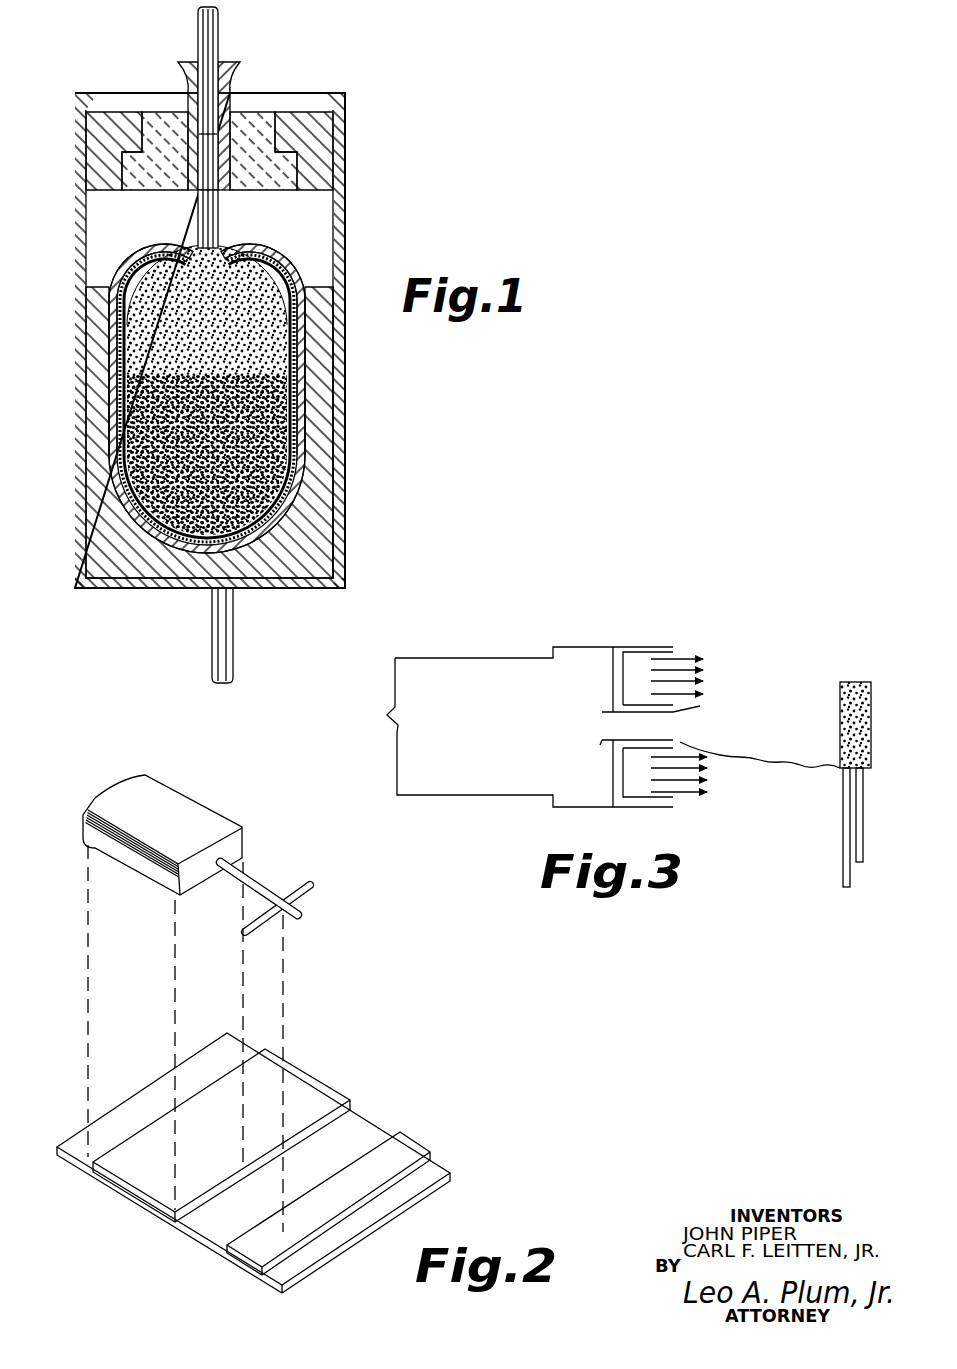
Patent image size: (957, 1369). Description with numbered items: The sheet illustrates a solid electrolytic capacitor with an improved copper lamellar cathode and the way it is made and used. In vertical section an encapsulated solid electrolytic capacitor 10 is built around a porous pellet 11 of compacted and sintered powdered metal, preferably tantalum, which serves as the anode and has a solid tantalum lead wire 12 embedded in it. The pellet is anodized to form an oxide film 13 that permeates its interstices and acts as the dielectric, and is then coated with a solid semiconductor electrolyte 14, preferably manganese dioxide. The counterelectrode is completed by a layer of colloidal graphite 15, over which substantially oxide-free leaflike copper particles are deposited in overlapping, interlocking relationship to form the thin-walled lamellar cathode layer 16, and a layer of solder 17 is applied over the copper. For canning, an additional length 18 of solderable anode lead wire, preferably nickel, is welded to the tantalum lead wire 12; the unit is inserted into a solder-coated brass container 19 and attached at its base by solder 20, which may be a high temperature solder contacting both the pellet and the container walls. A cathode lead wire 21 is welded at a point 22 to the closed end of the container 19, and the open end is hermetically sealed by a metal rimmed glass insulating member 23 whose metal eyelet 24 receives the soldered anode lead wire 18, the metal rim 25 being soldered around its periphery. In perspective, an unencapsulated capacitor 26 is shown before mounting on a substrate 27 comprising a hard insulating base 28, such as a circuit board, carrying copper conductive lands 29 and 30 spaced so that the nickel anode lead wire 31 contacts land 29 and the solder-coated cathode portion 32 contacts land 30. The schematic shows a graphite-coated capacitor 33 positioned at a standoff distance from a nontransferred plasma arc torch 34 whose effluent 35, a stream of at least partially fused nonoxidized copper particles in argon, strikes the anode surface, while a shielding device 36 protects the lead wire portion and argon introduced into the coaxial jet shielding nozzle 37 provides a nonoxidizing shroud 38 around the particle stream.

In FIG. 1, the encapsulated solid electrolytic capacitor 10 is at (352, 213).
In FIG. 1, the porous pellet 11 is at (232, 262).
In FIG. 1, the tantalum lead wire 12 is at (204, 213).
In FIG. 1, the oxide film 13 is at (292, 378).
In FIG. 1, the solid semiconductor electrolyte 14 is at (303, 410).
In FIG. 1, the colloidal graphite layer 15 is at (120, 466).
In FIG. 1, the copper lamellar cathode layer 16 is at (120, 406).
In FIG. 1, the solder layer 17 is at (146, 250).
In FIG. 1, the additional length of anode lead wire 18 is at (198, 28).
In FIG. 1, the container 19 is at (340, 467).
In FIG. 1, the solder 20 is at (315, 545).
In FIG. 1, the cathode lead wire 21 is at (214, 671).
In FIG. 1, the weld point 22 is at (211, 591).
In FIG. 1, the glass insulating member 23 is at (257, 118).
In FIG. 1, the metal eyelet 24 is at (238, 72).
In FIG. 1, the metal rim 25 is at (306, 115).
In FIG. 2, the solid electrolytic capacitor 26 is at (215, 800).
In FIG. 2, the substrate 27 is at (362, 1103).
In FIG. 2, the hard base 28 is at (333, 1252).
In FIG. 2, the conductive land 29 is at (415, 1150).
In FIG. 2, the conductive land 30 is at (306, 1090).
In FIG. 2, the nickel anode lead wire 31 is at (296, 880).
In FIG. 2, the solder-coated cathode portion 32 is at (138, 862).
In FIG. 3, the solid electrolytic capacitor 33 is at (850, 682).
In FIG. 3, the nontransferred plasma arc torch 34 is at (470, 676).
In FIG. 3, the effluent 35 is at (763, 698).
In FIG. 3, the shielding device 36 is at (843, 842).
In FIG. 3, the coaxial jet shielding nozzle 37 is at (640, 647).
In FIG. 3, the shroud 38 is at (682, 655).